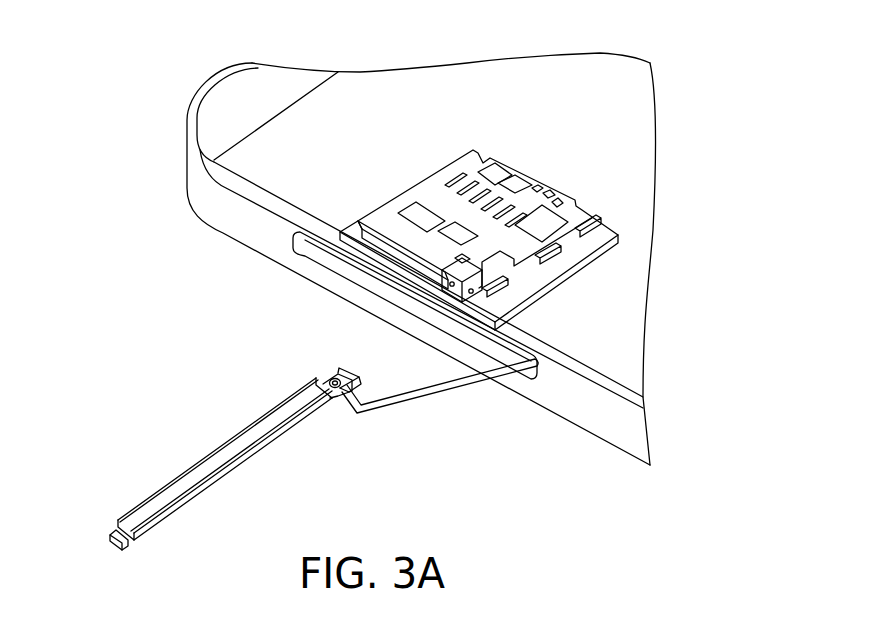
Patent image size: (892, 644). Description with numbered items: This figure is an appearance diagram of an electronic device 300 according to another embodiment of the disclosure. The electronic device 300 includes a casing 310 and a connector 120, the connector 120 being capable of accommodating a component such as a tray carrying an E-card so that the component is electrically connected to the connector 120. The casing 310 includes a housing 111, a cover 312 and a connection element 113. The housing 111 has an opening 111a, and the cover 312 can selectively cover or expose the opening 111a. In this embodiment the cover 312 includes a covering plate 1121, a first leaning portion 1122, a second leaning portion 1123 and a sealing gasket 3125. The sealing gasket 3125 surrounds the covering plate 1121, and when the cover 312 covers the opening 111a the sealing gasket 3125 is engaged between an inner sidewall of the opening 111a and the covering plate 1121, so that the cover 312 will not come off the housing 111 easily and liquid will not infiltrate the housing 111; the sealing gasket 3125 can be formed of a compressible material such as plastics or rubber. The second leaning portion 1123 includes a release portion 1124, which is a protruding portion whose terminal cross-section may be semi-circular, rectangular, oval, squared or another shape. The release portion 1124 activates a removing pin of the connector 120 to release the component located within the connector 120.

The electronic device 300 is at (183, 59).
The housing 111 is at (550, 398).
The opening 111a is at (343, 262).
The connector 120 is at (427, 192).
The casing 310 is at (537, 456).
The cover 312 is at (300, 420).
The covering plate 1121 is at (197, 474).
The first leaning portion 1122 is at (112, 532).
The sealing gasket 3125 is at (188, 504).
The second leaning portion 1123 is at (328, 381).
The release portion 1124 is at (347, 366).
The connection element 113 is at (431, 392).